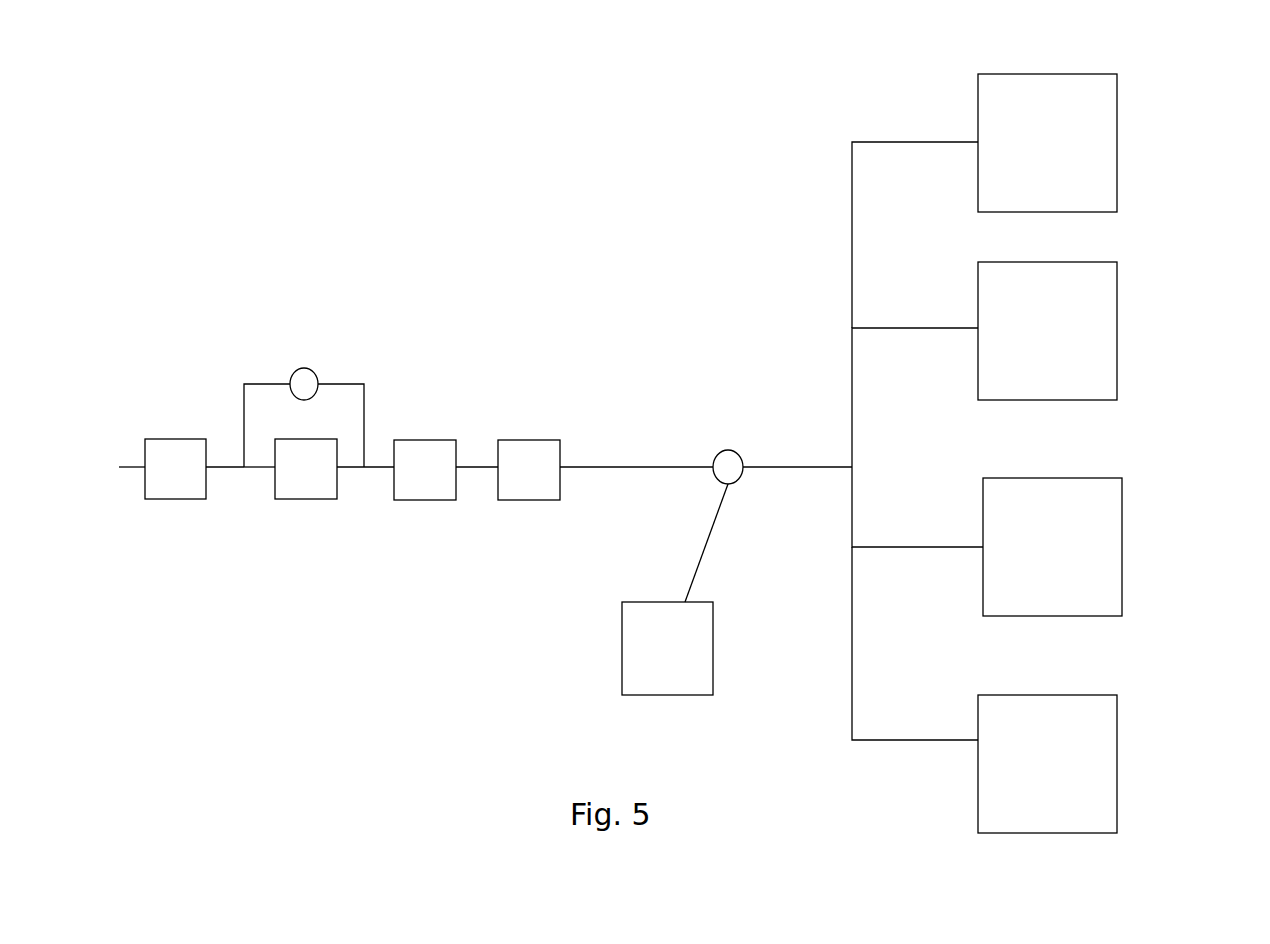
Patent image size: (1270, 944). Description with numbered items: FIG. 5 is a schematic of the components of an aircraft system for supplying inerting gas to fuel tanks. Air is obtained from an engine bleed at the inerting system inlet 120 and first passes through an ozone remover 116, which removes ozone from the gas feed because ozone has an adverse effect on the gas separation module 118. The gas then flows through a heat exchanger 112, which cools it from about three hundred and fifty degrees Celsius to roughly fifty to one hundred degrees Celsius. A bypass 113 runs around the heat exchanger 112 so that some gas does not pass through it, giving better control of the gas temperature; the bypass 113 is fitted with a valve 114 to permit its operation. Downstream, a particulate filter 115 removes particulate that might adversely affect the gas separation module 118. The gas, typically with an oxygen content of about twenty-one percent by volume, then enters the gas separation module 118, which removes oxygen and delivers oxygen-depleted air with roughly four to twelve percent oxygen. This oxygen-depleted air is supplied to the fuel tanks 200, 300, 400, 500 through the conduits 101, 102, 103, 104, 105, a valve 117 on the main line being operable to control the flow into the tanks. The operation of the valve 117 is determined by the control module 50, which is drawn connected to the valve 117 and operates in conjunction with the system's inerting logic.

The control module 50 is at (650, 675).
The conduit 101 is at (655, 472).
The conduit 102 is at (855, 245).
The conduit 103 is at (852, 387).
The conduit 104 is at (850, 505).
The conduit 105 is at (855, 633).
The heat exchanger 112 is at (305, 477).
The bypass 113 is at (248, 382).
The valve 114 is at (307, 365).
The particulate filter 115 is at (435, 438).
The ozone remover 116 is at (176, 438).
The valve 117 is at (712, 455).
The gas separation module 118 is at (530, 503).
The inerting system inlet 120 is at (119, 460).
The fuel tank 200 is at (1122, 153).
The fuel tank 300 is at (1118, 330).
The fuel tank 400 is at (1123, 548).
The fuel tank 500 is at (1120, 762).